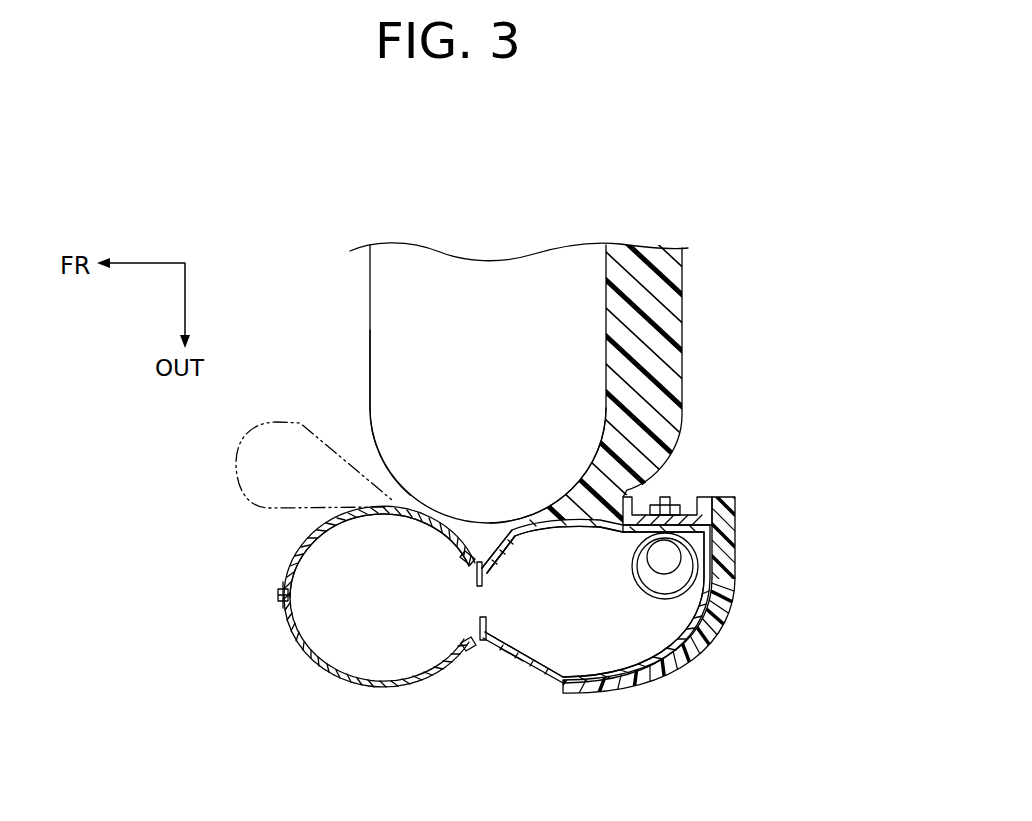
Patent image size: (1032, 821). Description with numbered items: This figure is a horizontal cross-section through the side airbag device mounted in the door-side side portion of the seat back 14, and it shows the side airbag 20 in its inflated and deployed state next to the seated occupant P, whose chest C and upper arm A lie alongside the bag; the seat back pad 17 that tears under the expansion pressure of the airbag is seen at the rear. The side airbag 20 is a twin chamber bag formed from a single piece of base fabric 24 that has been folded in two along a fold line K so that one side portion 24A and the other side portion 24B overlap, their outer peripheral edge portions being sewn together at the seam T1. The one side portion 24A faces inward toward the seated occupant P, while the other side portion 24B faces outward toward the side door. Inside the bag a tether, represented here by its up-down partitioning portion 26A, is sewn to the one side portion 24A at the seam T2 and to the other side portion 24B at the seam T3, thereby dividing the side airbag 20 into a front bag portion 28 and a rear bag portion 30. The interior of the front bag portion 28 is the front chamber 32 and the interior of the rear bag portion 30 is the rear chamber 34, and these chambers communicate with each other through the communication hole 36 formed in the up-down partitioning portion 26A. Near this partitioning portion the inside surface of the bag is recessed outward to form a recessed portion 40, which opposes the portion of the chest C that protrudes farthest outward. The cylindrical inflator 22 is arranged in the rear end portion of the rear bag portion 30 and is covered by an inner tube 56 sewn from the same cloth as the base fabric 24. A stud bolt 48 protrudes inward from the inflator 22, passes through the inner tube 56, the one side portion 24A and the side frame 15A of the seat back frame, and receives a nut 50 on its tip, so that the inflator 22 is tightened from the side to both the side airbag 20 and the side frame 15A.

The seated occupant P is at (362, 306).
The chest C is at (368, 372).
The seat back 14 is at (703, 307).
The seat back pad 17 is at (688, 356).
The stud bolt 48 is at (665, 497).
The nut 50 is at (680, 506).
The side frame 15A is at (736, 520).
The fold line K is at (737, 545).
The inflator 22 is at (699, 566).
The inner tube 56 is at (686, 594).
The one side portion 24A is at (313, 538).
The upper arm A is at (262, 507).
The seam T2 is at (466, 557).
The front chamber 32 is at (372, 599).
The communication hole 36 is at (479, 580).
The recessed portion 40 is at (494, 538).
The rear chamber 34 is at (612, 599).
The seam T1 is at (284, 605).
The seam T3 is at (464, 648).
The up-down partitioning portion 26A is at (487, 620).
The other side portion 24B is at (322, 660).
The front bag portion 28 is at (350, 688).
The side airbag 20 is at (349, 636).
The base fabric 24 is at (500, 660).
The rear bag portion 30 is at (589, 640).